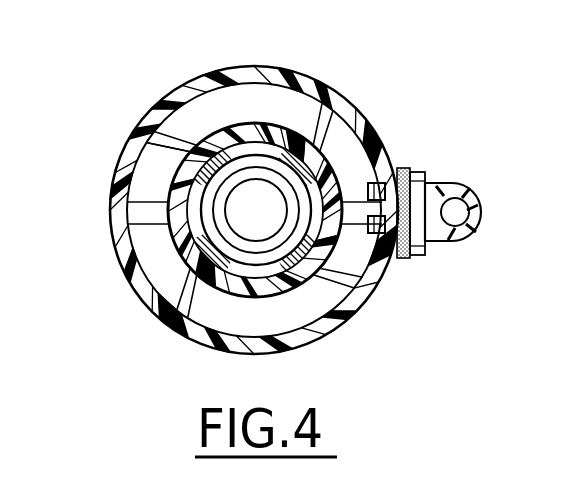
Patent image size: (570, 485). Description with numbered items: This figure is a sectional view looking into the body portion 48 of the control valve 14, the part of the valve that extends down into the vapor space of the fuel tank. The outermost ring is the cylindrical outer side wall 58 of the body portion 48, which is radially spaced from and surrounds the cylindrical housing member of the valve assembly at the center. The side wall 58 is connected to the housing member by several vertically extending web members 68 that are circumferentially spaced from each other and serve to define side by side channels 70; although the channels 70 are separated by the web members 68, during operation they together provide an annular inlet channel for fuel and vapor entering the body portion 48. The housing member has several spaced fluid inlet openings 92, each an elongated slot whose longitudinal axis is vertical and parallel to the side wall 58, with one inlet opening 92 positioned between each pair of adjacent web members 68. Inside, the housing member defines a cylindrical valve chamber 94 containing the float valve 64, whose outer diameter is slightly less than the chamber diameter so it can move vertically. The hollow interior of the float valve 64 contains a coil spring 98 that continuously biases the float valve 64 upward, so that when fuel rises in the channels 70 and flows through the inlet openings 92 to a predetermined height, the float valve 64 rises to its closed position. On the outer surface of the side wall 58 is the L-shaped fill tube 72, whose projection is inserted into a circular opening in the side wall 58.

The control valve 14 is at (128, 323).
The body portion 48 is at (338, 60).
The outer side wall 58 is at (348, 96).
The float valve 64 is at (196, 204).
The web members 68 is at (212, 92).
The channels 70 is at (266, 78).
The fill tube 72 is at (490, 195).
The fluid inlet openings 92 is at (270, 133).
The valve chamber 94 is at (165, 175).
The coil spring 98 is at (222, 222).